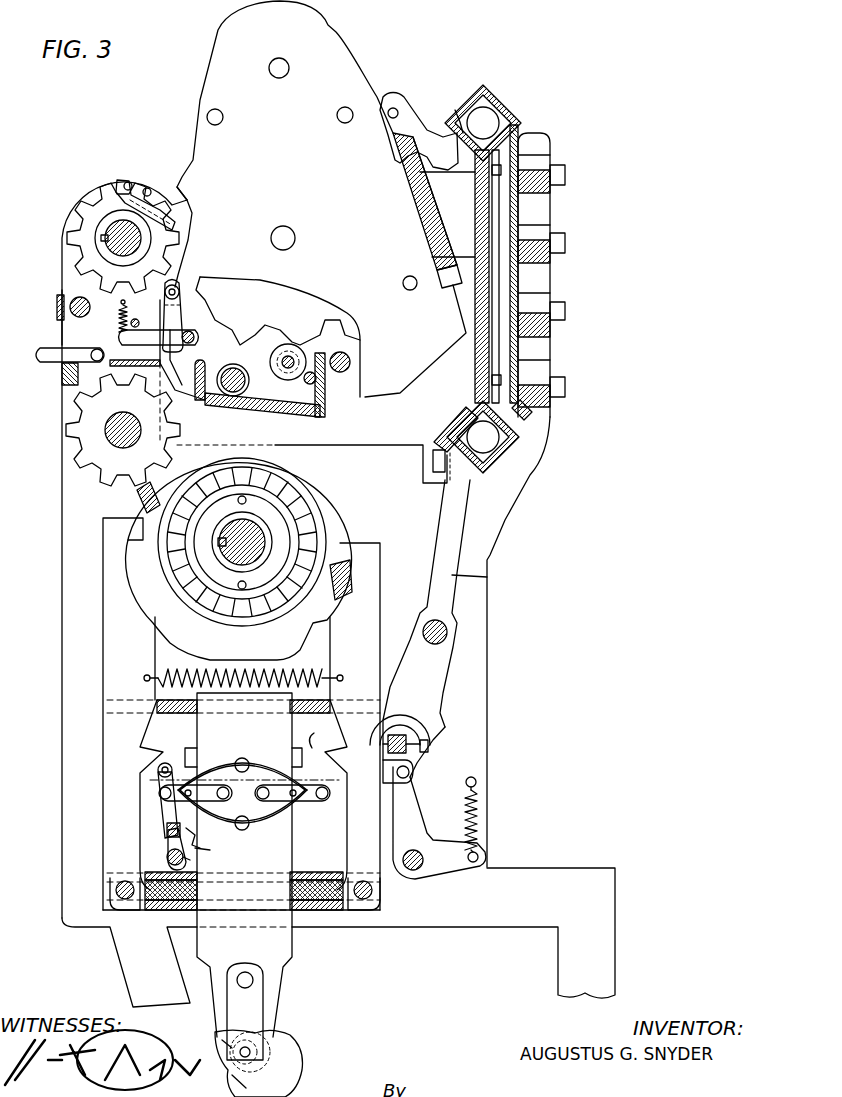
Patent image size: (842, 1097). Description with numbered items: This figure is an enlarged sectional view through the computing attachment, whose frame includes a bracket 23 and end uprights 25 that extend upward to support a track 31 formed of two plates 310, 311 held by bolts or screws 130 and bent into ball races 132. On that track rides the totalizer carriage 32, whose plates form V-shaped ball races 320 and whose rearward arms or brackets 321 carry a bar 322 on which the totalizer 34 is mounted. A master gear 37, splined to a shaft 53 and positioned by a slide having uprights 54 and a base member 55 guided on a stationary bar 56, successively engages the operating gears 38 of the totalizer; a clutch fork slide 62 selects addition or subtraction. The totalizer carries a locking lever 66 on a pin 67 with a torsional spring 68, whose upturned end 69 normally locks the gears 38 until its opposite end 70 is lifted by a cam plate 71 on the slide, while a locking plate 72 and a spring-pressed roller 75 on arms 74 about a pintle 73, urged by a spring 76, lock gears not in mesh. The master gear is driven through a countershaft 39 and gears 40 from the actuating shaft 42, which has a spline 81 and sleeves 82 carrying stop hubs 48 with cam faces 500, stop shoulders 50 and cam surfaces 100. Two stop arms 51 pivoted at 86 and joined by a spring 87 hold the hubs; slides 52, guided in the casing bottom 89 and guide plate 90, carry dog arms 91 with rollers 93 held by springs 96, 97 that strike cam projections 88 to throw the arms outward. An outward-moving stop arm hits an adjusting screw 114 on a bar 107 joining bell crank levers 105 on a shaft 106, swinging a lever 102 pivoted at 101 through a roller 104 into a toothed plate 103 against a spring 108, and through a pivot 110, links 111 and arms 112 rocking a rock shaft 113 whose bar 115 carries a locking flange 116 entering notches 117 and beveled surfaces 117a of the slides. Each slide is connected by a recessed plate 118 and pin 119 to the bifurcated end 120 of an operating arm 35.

The bracket 23 is at (453, 933).
The end uprights 25 is at (66, 735).
The track 31 is at (516, 128).
The totalizer carriage 32 is at (488, 217).
The totalizer 34 is at (320, 199).
The operating arms or levers 35 is at (295, 1060).
The master gear 37 is at (125, 180).
The operating gears 38 is at (225, 290).
The countershaft 39 is at (115, 432).
The gears 40 is at (80, 420).
The actuating shaft 42 is at (225, 552).
The stop hub 48 is at (239, 560).
The stop shoulders 50 is at (345, 540).
The stop arms 51 is at (241, 658).
The slides 52 is at (243, 865).
The shaft 53 is at (108, 248).
The arms or uprights 54 is at (68, 328).
The base member 55 is at (112, 361).
The stationary bar 56 is at (75, 300).
The slide 62 is at (56, 310).
The locking lever 66 is at (298, 415).
The pin 67 is at (270, 362).
The torsional spring 68 is at (249, 382).
The upturned end 69 is at (326, 386).
The opposite end 70 is at (205, 362).
The cam plate 71 is at (206, 405).
The locking plate 72 is at (172, 200).
The pintle 73 is at (159, 337).
The arms 74 is at (173, 316).
The bar or roller 75 is at (180, 290).
The spring 76 is at (118, 318).
The spline or key 81 is at (222, 543).
The sleeves 82 is at (262, 530).
The pivots 86 is at (116, 891).
The spring 87 is at (192, 672).
The cam projections 88 is at (152, 762).
The bottom 89 is at (158, 912).
The guide plate 90 is at (182, 714).
The arms 91 is at (215, 800).
The roller 93 is at (158, 795).
The spring 96 is at (265, 765).
The spring 97 is at (262, 826).
The cam surfaces 100 is at (353, 533).
The pivot 101 is at (448, 632).
The lever 102 is at (487, 580).
The plate 103 is at (450, 420).
The roller 104 is at (436, 715).
The bell crank levers 105 is at (439, 823).
The shaft 106 is at (420, 868).
The bar 107 is at (400, 715).
The spring 108 is at (480, 810).
The pivot 110 is at (410, 772).
The links 111 is at (316, 741).
The arms 112 is at (160, 812).
The rock shaft 113 is at (190, 860).
The adjusting screws 114 is at (428, 746).
The longitudinal bar 115 is at (168, 852).
The locking flange 116 is at (167, 830).
The notches 117 is at (200, 838).
The beveled surfaces 117a is at (208, 850).
The bent or recessed plate 118 is at (263, 1005).
The pin 119 is at (232, 1078).
The slotted or bifurcated end 120 is at (222, 1045).
The bolts or screws 130 is at (566, 245).
The ball races 132 is at (493, 95).
The plate 310 is at (548, 152).
The plate 311 is at (530, 350).
The ball races 320 is at (462, 132).
The arms or brackets 321 is at (440, 190).
The bar 322 is at (432, 217).
The cam faces 500 is at (137, 505).